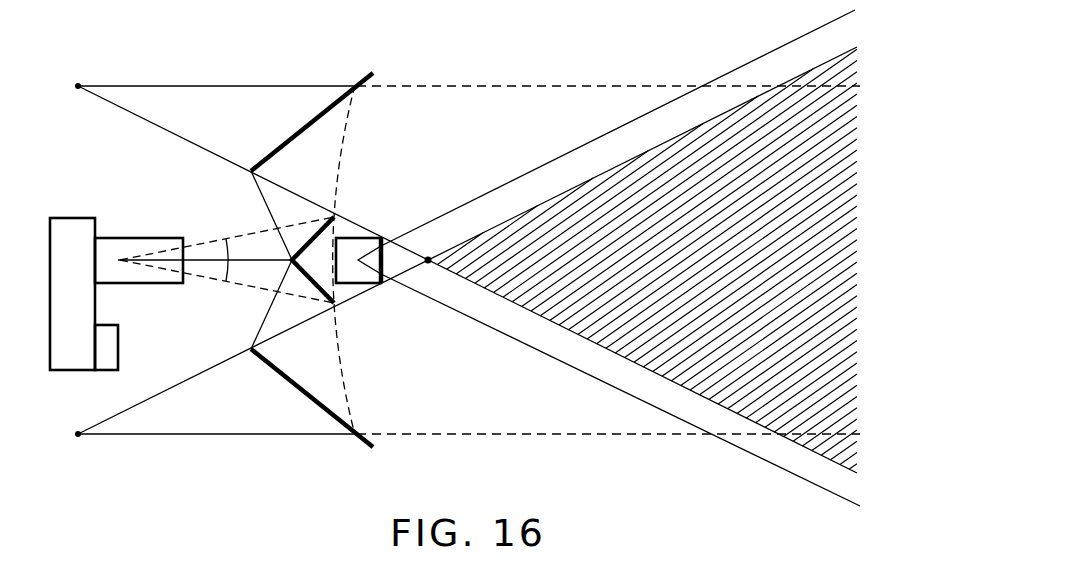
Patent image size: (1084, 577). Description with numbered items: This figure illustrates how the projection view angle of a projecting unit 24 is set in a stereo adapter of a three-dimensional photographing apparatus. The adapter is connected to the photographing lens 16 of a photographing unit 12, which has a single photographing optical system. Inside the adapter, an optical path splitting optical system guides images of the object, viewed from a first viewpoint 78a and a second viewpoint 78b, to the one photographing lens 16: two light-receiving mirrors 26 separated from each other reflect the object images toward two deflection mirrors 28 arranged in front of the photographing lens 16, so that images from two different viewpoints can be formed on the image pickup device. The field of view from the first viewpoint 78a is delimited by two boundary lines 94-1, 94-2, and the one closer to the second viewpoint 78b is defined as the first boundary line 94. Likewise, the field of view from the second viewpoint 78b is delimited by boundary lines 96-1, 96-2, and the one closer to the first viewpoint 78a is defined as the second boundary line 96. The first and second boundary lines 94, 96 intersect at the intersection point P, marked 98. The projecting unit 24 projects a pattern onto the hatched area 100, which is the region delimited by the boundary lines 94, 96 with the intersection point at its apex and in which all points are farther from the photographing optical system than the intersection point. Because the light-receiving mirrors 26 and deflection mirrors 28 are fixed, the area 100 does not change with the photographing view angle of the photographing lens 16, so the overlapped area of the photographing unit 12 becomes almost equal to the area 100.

The photographing unit 12 is at (72, 372).
The photographing lens 16 is at (140, 237).
The projecting unit 24 is at (367, 237).
The light-receiving mirrors 26 is at (290, 140).
The deflection mirrors 28 is at (334, 306).
The first viewpoint 78a is at (78, 438).
The second viewpoint 78b is at (78, 90).
The first boundary line 94 is at (469, 244).
The boundary line 94-1 is at (547, 200).
The boundary line 94-2 is at (587, 434).
The second boundary line 96 is at (469, 274).
The boundary line 96-1 is at (517, 84).
The boundary line 96-2 is at (595, 343).
The intersection point 98 is at (428, 255).
The area 100 is at (668, 147).